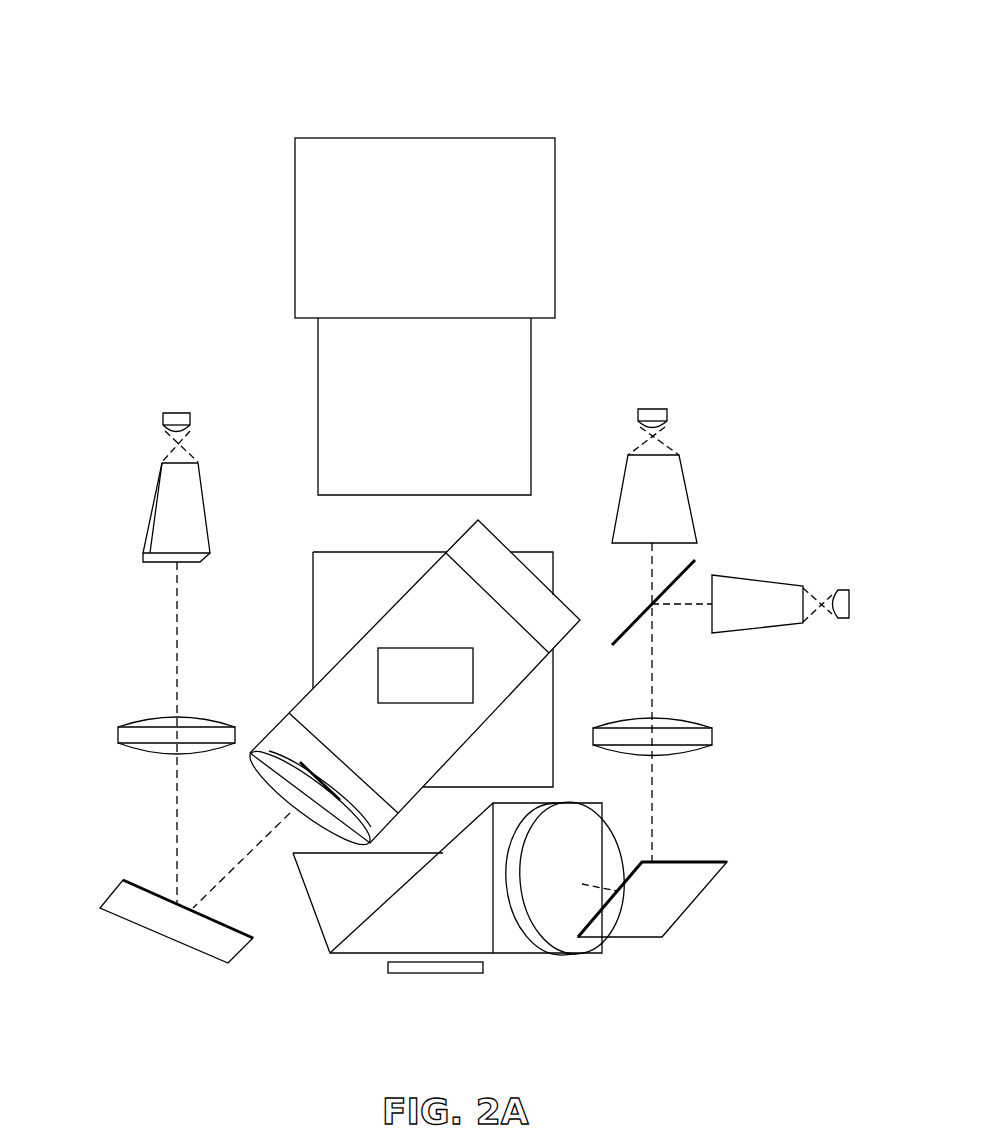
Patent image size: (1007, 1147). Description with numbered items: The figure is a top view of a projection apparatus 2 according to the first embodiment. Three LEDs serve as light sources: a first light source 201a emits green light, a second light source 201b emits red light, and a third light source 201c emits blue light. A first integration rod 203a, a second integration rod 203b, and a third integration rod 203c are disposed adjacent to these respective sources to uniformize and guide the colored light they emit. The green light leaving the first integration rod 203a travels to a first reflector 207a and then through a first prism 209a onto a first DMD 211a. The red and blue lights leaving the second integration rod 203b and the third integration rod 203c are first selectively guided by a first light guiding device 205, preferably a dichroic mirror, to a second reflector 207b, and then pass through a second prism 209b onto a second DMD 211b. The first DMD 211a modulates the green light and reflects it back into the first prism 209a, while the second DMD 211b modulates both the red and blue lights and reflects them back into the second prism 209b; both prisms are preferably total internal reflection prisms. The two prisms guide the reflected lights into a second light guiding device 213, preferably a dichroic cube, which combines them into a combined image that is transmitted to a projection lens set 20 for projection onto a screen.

The projection apparatus 2 is at (738, 80).
The projection lens set 20 is at (505, 138).
The first light source 201a is at (163, 420).
The second light source 201b is at (667, 417).
The third light source 201c is at (845, 590).
The first integration rod 203a is at (152, 510).
The second integration rod 203b is at (677, 493).
The third integration rod 203c is at (753, 622).
The first light guiding device 205 is at (633, 626).
The first reflector 207a is at (172, 922).
The second reflector 207b is at (664, 902).
The first prism 209a is at (320, 707).
The second prism 209b is at (328, 897).
The first DMD 211a is at (412, 658).
The second DMD 211b is at (483, 968).
The second light guiding device 213 is at (333, 569).